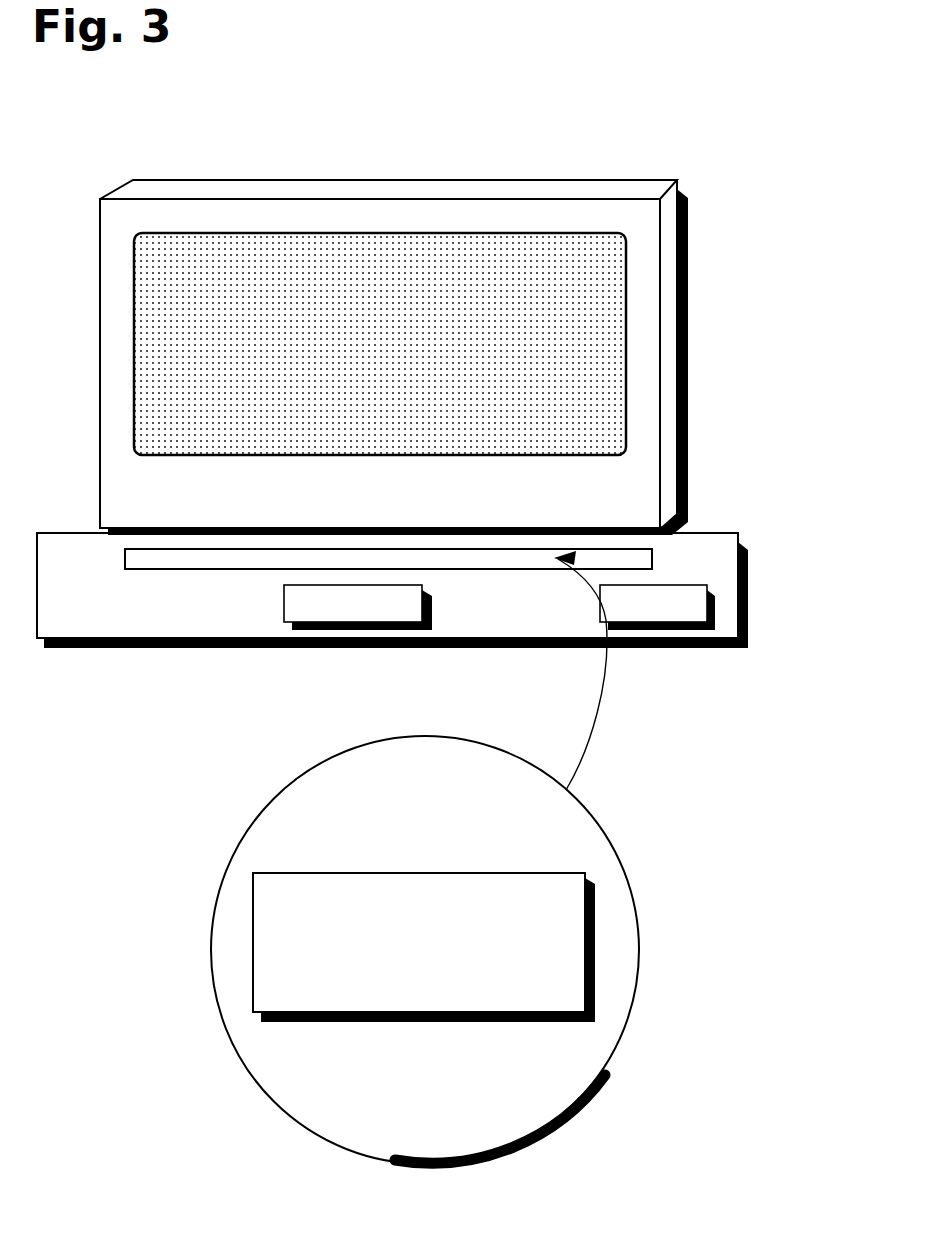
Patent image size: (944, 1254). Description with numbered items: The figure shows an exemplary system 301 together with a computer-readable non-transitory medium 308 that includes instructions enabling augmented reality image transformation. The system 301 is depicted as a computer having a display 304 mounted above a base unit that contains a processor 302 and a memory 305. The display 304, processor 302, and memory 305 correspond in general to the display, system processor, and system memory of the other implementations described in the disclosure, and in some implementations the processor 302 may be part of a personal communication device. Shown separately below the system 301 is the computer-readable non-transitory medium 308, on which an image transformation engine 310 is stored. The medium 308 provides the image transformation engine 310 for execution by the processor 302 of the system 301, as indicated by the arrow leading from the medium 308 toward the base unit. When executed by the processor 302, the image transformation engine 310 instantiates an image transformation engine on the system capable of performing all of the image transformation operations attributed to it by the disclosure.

The system 301 is at (800, 84).
The processor 302 is at (432, 607).
The display 304 is at (476, 179).
The memory 305 is at (676, 585).
The computer-readable non-transitory medium 308 is at (213, 940).
The image transformation engine 310 is at (432, 1022).